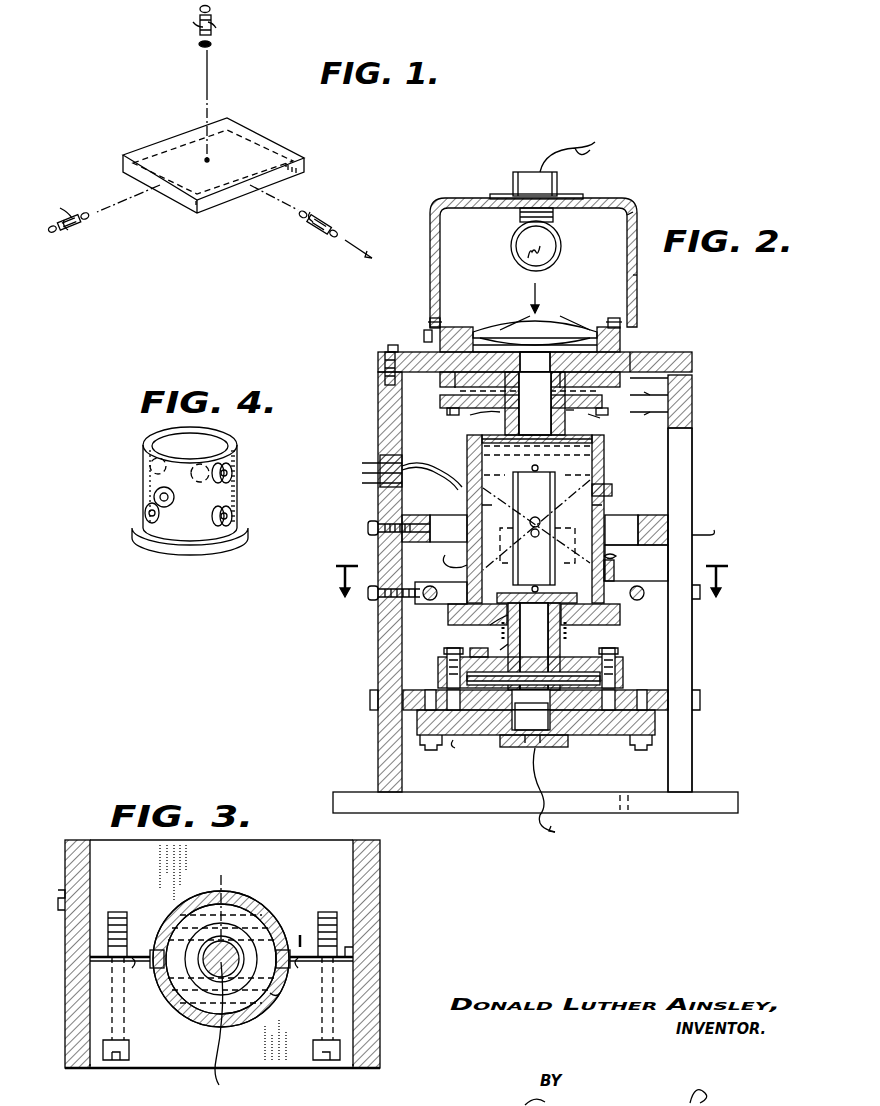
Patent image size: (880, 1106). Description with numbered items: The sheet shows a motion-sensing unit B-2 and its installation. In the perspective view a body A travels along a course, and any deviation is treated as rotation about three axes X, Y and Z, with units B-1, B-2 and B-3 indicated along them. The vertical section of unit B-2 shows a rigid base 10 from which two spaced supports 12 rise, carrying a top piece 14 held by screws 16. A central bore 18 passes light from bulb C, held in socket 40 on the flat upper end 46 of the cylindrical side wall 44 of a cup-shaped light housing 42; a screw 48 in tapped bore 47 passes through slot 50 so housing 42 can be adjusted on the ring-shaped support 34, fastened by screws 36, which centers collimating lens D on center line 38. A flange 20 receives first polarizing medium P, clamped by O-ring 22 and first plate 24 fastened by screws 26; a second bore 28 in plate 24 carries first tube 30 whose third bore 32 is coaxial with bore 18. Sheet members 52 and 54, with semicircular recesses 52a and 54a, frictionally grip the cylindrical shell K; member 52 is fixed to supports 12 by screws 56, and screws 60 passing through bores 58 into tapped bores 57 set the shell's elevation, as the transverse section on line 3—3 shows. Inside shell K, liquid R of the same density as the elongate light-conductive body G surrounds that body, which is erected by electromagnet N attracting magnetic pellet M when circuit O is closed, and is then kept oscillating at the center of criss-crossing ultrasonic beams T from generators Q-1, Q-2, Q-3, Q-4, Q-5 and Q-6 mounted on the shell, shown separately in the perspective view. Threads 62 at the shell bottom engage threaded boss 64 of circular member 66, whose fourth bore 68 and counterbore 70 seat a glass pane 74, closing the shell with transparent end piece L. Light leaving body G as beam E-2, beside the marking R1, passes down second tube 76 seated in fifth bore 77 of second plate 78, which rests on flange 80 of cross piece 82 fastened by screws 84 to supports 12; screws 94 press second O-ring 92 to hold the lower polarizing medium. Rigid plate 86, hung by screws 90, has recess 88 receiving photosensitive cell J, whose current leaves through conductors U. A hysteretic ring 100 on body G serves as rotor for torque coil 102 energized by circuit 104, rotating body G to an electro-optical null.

In FIG. 1, the body A is at (283, 138).
In FIG. 1, the axis Y is at (207, 100).
In FIG. 1, the axis Z is at (128, 205).
In FIG. 1, the axis X is at (278, 206).
In FIG. 1, the X axis spin element B-1 is at (335, 220).
In FIG. 1, the unit B-2 is at (218, 22).
In FIG. 2, the unit B-2 is at (700, 492).
In FIG. 3, the unit B-2 is at (388, 915).
In FIG. 1, the Z axis spin element B-3 is at (90, 228).
In FIG. 2, the rigid base 10 is at (712, 797).
In FIG. 3, the rigid base 10 is at (335, 1068).
In FIG. 2, the supports 12 is at (380, 655).
In FIG. 3, the supports 12 is at (72, 862).
In FIG. 2, the top piece 14 is at (693, 361).
In FIG. 2, the screws 16 is at (390, 348).
In FIG. 2, the central bore 18 is at (482, 370).
In FIG. 2, the ring-shaped flange 20 is at (692, 388).
In FIG. 2, the O-ring 22 is at (647, 362).
In FIG. 2, the first circular plate 24 is at (692, 402).
In FIG. 2, the screws 26 is at (692, 418).
In FIG. 2, the second bore 28 is at (448, 406).
In FIG. 2, the first tube 30 is at (470, 437).
In FIG. 2, the third bore 32 is at (608, 422).
In FIG. 2, the ring-shaped support 34 is at (617, 345).
In FIG. 2, the screws 36 is at (620, 335).
In FIG. 2, the longitudinal center line 38 is at (535, 283).
In FIG. 3, the longitudinal center line 38 is at (226, 1031).
In FIG. 2, the socket 40 is at (522, 222).
In FIG. 2, the light housing 42 is at (642, 226).
In FIG. 2, the cylindrical side wall 44 is at (640, 278).
In FIG. 2, the upper end 46 is at (593, 200).
In FIG. 2, the tapped bore 47 is at (392, 372).
In FIG. 2, the screw 48 is at (428, 333).
In FIG. 2, the slot 50 is at (436, 326).
In FIG. 2, the sheet member 52 is at (640, 580).
In FIG. 3, the sheet member 52 is at (227, 939).
In FIG. 3, the semicircular recess 52a is at (255, 905).
In FIG. 3, the sheet member 54 is at (221, 952).
In FIG. 3, the semicircular recess 54a is at (275, 1000).
In FIG. 2, the screws 56 is at (372, 600).
In FIG. 3, the screws 56 is at (60, 910).
In FIG. 3, the tapped bores 57 is at (125, 913).
In FIG. 3, the bores 58 is at (112, 1012).
In FIG. 2, the screws 60 is at (433, 601).
In FIG. 3, the screws 60 is at (125, 1030).
In FIG. 2, the threads 62 is at (615, 568).
In FIG. 2, the threaded boss 64 is at (583, 608).
In FIG. 2, the circular member 66 is at (628, 612).
In FIG. 2, the fourth bore 68 is at (616, 556).
In FIG. 3, the fourth bore 68 is at (299, 931).
In FIG. 2, the counterbore 70 is at (490, 627).
In FIG. 3, the circular pane 74 is at (195, 940).
In FIG. 2, the second tube 76 is at (534, 646).
In FIG. 2, the fifth bore 77 is at (494, 647).
In FIG. 2, the second plate 78 is at (623, 664).
In FIG. 2, the second ring-shaped flange 80 is at (600, 678).
In FIG. 2, the cross piece 82 is at (700, 705).
In FIG. 2, the screws 84 is at (700, 694).
In FIG. 2, the rigid plate 86 is at (600, 735).
In FIG. 2, the central recess 88 is at (530, 732).
In FIG. 2, the screws 90 is at (655, 740).
In FIG. 2, the second O-ring 92 is at (470, 690).
In FIG. 2, the screws 94 is at (462, 749).
In FIG. 2, the annular ring 100 is at (548, 527).
In FIG. 2, the torque coil 102 is at (655, 528).
In FIG. 2, the circuit 104 is at (714, 532).
In FIG. 2, the bulb C is at (560, 240).
In FIG. 2, the collimating lens D is at (512, 322).
In FIG. 2, the first polarizing medium P is at (571, 370).
In FIG. 2, the electrical circuit O is at (468, 650).
In FIG. 2, the photosensitive cell J is at (512, 418).
In FIG. 2, the electromagnet N is at (581, 416).
In FIG. 2, the pellet M is at (463, 462).
In FIG. 2, the end piece L is at (602, 438).
In FIG. 2, the cylindrical shell K is at (600, 465).
In FIG. 4, the cylindrical shell K is at (143, 447).
In FIG. 3, the cylindrical shell K is at (243, 945).
In FIG. 2, the light conductive body G is at (595, 470).
In FIG. 3, the light conductive body G is at (258, 895).
In FIG. 2, the body of liquid R is at (597, 482).
In FIG. 3, the body of liquid R is at (228, 896).
In FIG. 2, the axis R1 is at (648, 639).
In FIG. 2, the beams of ultrasonic sound energy T is at (606, 508).
In FIG. 2, the electrical conductors U is at (544, 775).
In FIG. 2, the beam of light E-2 is at (570, 635).
In FIG. 2, the ultrasonic sound generator Q-1 is at (612, 490).
In FIG. 4, the ultrasonic sound generator Q-1 is at (232, 473).
In FIG. 2, the ultrasonic sound generator Q-2 is at (621, 530).
In FIG. 4, the ultrasonic sound generator Q-2 is at (232, 513).
In FIG. 3, the ultrasonic sound generator Q-2 is at (288, 970).
In FIG. 4, the ultrasonic sound generator Q-3 is at (150, 472).
In FIG. 2, the ultrasonic sound generator Q-4 is at (466, 567).
In FIG. 4, the ultrasonic sound generator Q-4 is at (150, 512).
In FIG. 3, the ultrasonic sound generator Q-4 is at (155, 968).
In FIG. 2, the ultrasonic sound generator Q-5 is at (534, 528).
In FIG. 4, the ultrasonic sound generator Q-5 is at (170, 505).
In FIG. 4, the ultrasonic sound generator Q-6 is at (208, 468).
In FIG. 2, the section line 3 is at (529, 585).